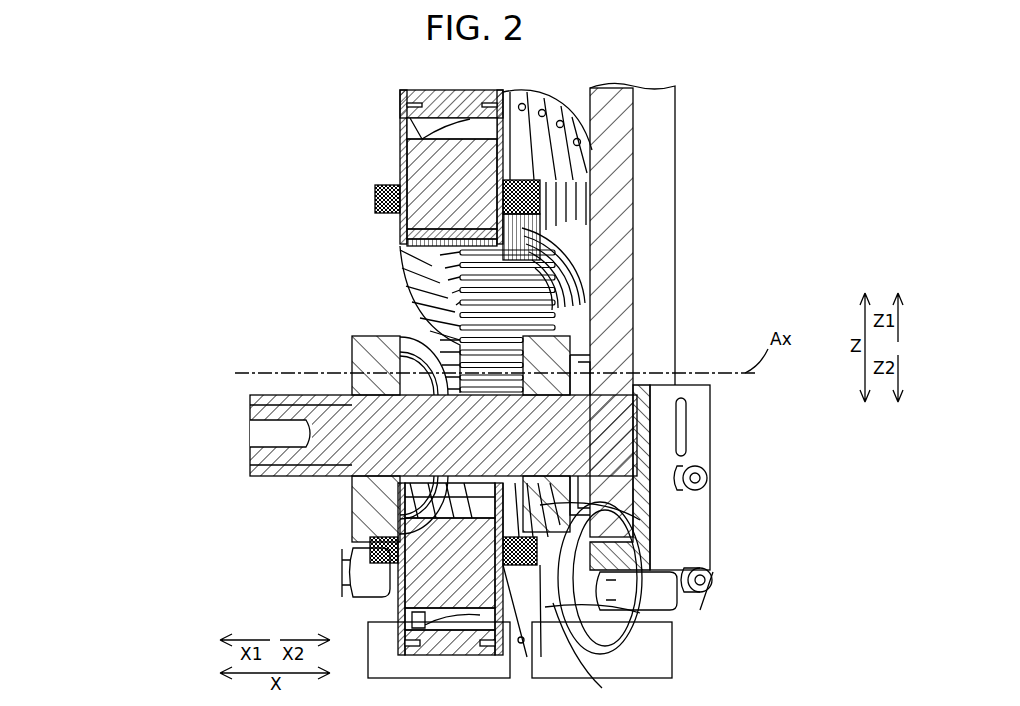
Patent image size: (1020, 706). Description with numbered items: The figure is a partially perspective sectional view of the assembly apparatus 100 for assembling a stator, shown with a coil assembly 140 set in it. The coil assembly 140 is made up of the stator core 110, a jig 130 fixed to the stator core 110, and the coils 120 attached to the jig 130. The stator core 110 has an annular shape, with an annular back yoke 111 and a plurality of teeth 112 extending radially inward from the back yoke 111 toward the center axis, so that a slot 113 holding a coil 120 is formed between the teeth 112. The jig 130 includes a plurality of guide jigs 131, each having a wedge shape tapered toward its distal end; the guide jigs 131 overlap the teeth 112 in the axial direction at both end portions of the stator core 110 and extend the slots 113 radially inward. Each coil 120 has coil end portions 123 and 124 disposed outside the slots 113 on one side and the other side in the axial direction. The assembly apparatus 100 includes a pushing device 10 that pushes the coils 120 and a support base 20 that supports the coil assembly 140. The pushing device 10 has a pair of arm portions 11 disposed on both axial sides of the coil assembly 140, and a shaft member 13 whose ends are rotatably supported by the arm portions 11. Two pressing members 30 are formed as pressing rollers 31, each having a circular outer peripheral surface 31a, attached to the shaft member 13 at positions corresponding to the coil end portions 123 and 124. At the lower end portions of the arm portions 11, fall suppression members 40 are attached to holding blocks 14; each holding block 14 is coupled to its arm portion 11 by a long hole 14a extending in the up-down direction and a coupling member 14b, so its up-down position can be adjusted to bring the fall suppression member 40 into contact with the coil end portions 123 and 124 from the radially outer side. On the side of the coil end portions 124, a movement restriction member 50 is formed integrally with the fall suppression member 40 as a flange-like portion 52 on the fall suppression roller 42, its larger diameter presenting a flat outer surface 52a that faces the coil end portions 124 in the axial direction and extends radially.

The assembly apparatus 100 is at (796, 117).
The pushing device 10 is at (701, 120).
The arm portion 11 is at (663, 215).
The shaft member 13 is at (254, 413).
The holding block 14 is at (699, 497).
The long hole 14a is at (686, 455).
The coupling member 14b is at (705, 478).
The support base 20 is at (634, 667).
The pressing member 30 is at (478, 415).
The pressing roller 31 is at (289, 419).
The outer peripheral surface 31a is at (405, 337).
The fall suppression member 40 is at (467, 587).
The fall suppression roller 42 is at (378, 593).
The movement restriction member 50 is at (680, 601).
The flange-like portion 52 is at (680, 601).
The flat outer surface 52a is at (595, 652).
The stator core 110 is at (428, 176).
The back yoke 111 is at (400, 149).
The teeth 112 is at (400, 228).
The slot 113 is at (574, 302).
The coil 120 is at (562, 183).
The coil end portion 123 is at (370, 541).
The coil end portion 124 is at (545, 500).
The jig 130 is at (400, 260).
The guide jig 131 is at (491, 263).
The coil assembly 140 is at (323, 167).